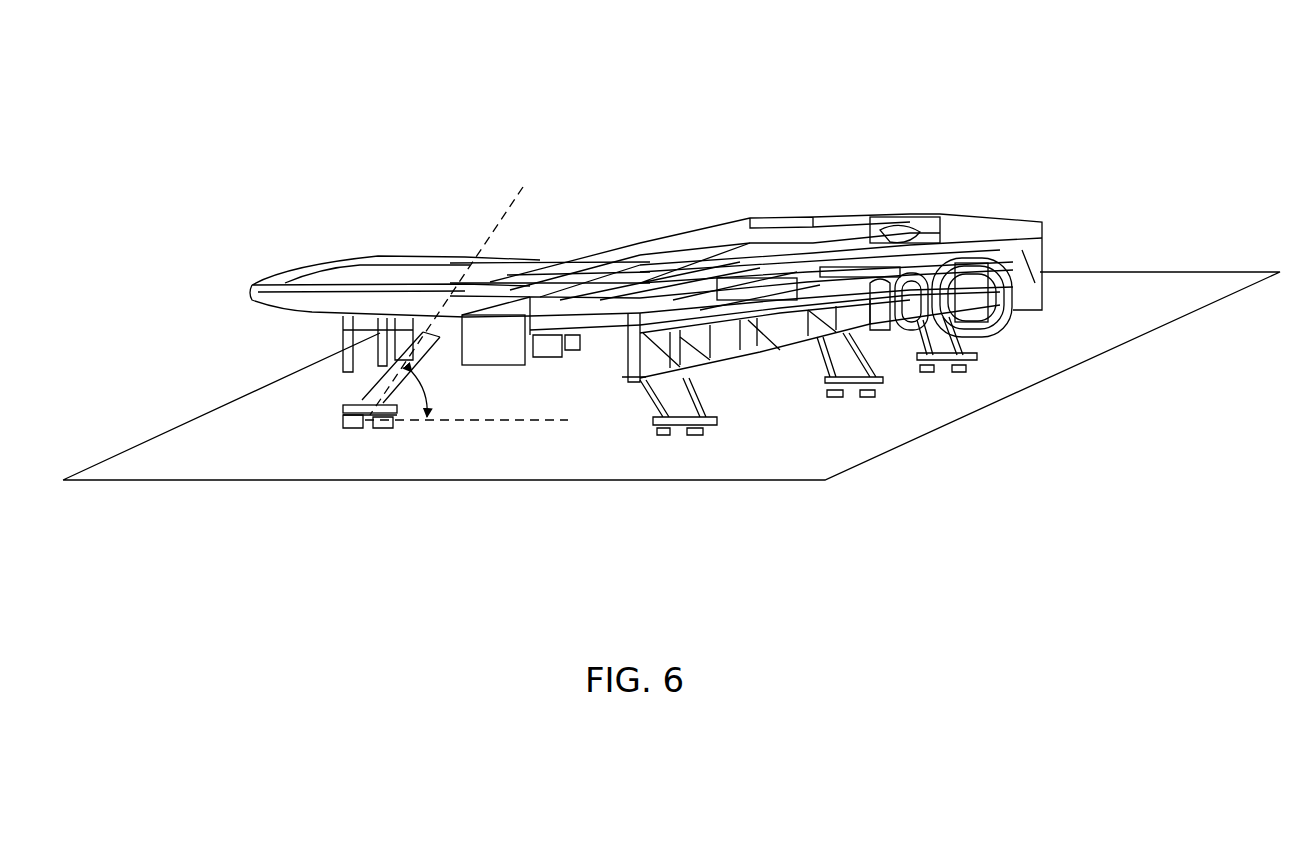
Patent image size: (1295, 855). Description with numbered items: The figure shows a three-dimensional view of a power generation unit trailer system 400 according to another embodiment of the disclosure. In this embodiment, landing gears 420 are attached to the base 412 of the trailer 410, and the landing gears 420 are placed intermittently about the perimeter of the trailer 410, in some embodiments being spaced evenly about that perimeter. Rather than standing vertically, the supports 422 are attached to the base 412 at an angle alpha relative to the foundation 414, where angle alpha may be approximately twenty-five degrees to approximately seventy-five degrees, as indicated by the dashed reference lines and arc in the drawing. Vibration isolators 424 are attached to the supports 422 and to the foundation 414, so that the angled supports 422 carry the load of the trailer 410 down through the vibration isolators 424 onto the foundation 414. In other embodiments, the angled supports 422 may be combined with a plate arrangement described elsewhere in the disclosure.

The power generation unit trailer system 400 is at (883, 114).
The trailer 410 is at (727, 198).
The base 412 is at (238, 212).
The foundation 414 is at (648, 465).
The landing gears 420 is at (341, 436).
The supports 422 is at (383, 372).
The vibration isolators 424 is at (387, 418).